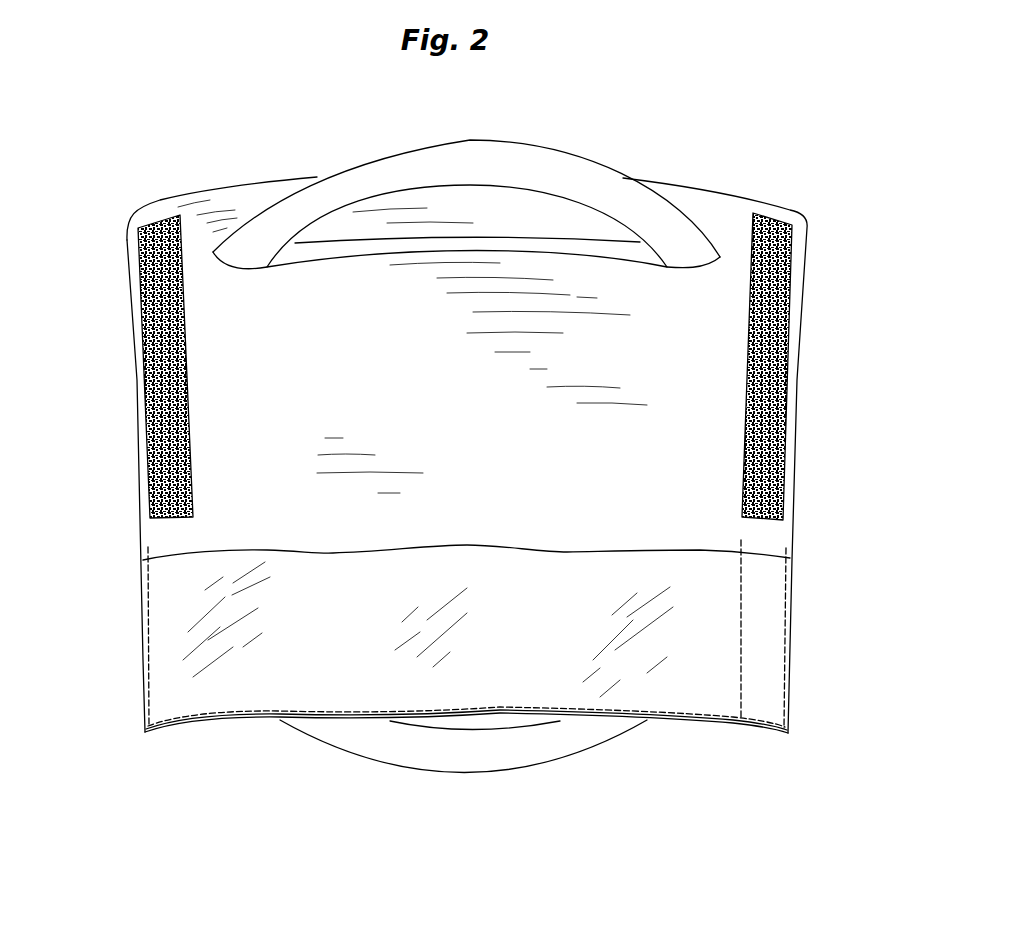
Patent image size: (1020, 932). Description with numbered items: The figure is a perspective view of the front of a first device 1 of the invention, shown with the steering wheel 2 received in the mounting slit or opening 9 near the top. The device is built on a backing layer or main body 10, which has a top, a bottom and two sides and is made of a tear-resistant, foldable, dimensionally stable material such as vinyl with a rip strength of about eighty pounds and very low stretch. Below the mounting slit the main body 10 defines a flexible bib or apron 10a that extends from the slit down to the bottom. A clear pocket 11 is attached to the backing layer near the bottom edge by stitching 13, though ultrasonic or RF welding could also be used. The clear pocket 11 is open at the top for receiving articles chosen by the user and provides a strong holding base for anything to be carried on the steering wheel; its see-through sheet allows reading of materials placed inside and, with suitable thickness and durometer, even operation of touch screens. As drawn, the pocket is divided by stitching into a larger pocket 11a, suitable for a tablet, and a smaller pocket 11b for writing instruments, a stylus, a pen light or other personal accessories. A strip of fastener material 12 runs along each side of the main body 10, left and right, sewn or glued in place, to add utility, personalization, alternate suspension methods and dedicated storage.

The first device 1 is at (457, 467).
The steering wheel 2 is at (367, 755).
The mounting slit 9 is at (350, 243).
The main body 10 is at (718, 200).
The flexible bib 10a is at (650, 492).
The clear pocket 11 is at (457, 633).
The larger pocket 11a is at (172, 552).
The smaller pocket 11b is at (762, 550).
The strip of fastener material 12 is at (772, 218).
The stitching 13 is at (188, 722).